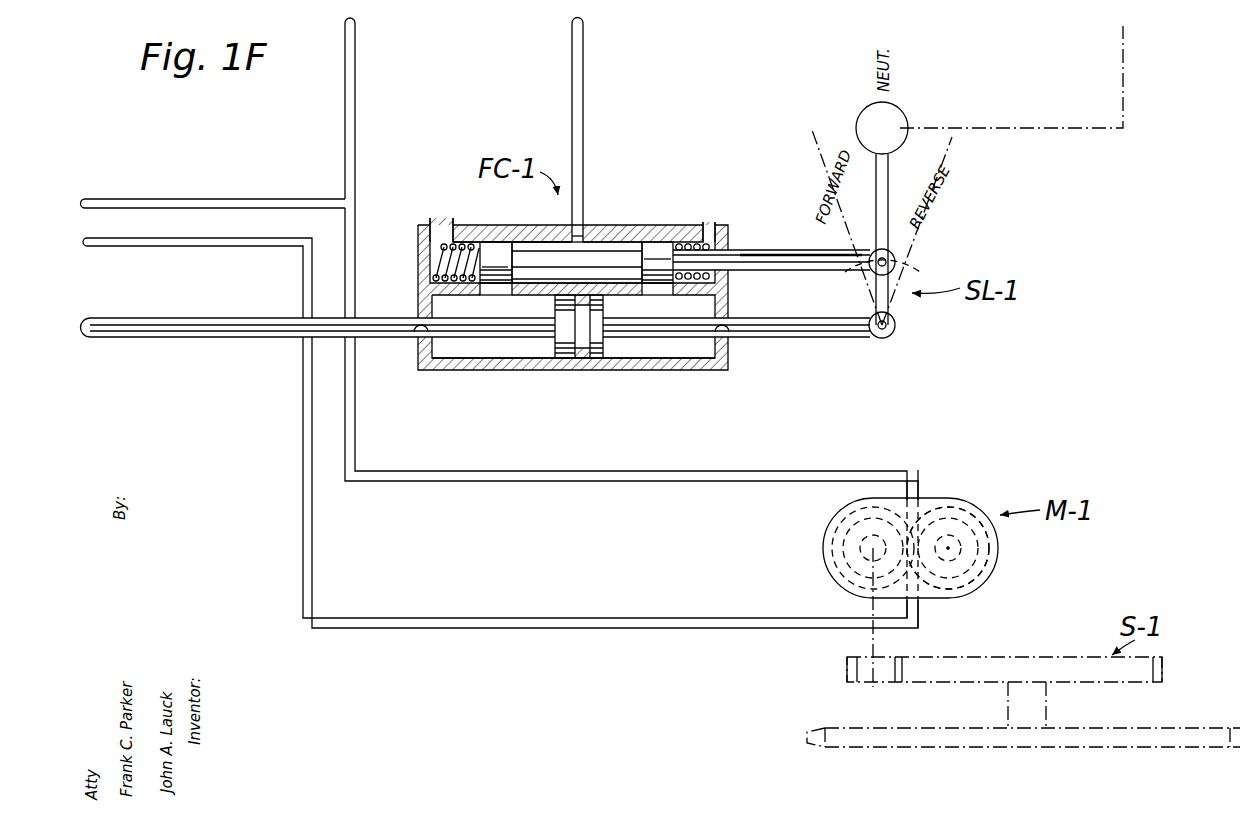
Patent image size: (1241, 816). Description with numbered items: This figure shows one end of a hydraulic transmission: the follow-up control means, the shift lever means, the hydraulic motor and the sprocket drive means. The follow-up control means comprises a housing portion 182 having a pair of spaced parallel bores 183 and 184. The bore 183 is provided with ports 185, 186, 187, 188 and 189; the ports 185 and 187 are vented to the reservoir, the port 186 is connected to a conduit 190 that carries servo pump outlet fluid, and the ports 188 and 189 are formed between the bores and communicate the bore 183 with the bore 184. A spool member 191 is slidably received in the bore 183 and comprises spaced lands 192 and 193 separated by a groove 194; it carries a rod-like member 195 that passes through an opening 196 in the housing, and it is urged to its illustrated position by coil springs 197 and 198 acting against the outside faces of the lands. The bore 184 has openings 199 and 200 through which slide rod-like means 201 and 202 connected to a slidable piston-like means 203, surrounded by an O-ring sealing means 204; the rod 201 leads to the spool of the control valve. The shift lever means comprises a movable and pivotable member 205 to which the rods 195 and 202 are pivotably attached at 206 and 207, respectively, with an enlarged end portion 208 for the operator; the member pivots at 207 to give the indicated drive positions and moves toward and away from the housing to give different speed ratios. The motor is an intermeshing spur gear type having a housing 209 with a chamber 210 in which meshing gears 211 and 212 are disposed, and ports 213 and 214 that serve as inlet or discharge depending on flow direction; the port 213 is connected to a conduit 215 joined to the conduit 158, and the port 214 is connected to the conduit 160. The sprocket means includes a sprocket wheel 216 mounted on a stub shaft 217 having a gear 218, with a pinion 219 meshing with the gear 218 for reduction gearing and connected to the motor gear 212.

The conduit 158 is at (143, 195).
The conduit 160 is at (118, 242).
The housing portion 182 is at (425, 288).
The bore 183 is at (538, 241).
The bore 184 is at (504, 359).
The port 185 is at (440, 228).
The port 186 is at (578, 232).
The port 187 is at (712, 222).
The port 188 is at (655, 290).
The port 189 is at (495, 290).
The conduit 190 is at (584, 40).
The spool member 191 is at (496, 240).
The land 192 is at (496, 260).
The land 193 is at (657, 262).
The groove 194 is at (610, 256).
The rod-like member 195 is at (848, 266).
The opening 196 is at (725, 252).
The coil spring 197 is at (425, 248).
The coil spring 198 is at (712, 279).
The opening 199 is at (416, 336).
The opening 200 is at (730, 335).
The rod-like means 201 is at (216, 318).
The rod-like means 202 is at (835, 338).
The piston-like means 203 is at (604, 347).
The O-ring sealing means 204 is at (582, 359).
The movable and pivotable member 205 is at (886, 180).
The pivot attachment 206 is at (896, 262).
The pivot attachment 207 is at (896, 325).
The enlarged end portion 208 is at (893, 118).
The housing 209 is at (950, 500).
The chamber 210 is at (982, 568).
The gear 211 is at (986, 540).
The gear 212 is at (838, 572).
The port 213 is at (912, 490).
The port 214 is at (915, 600).
The conduit 215 is at (356, 38).
The sprocket wheel 216 is at (970, 728).
The stub shaft 217 is at (1040, 707).
The gear 218 is at (962, 664).
The pinion 219 is at (846, 672).